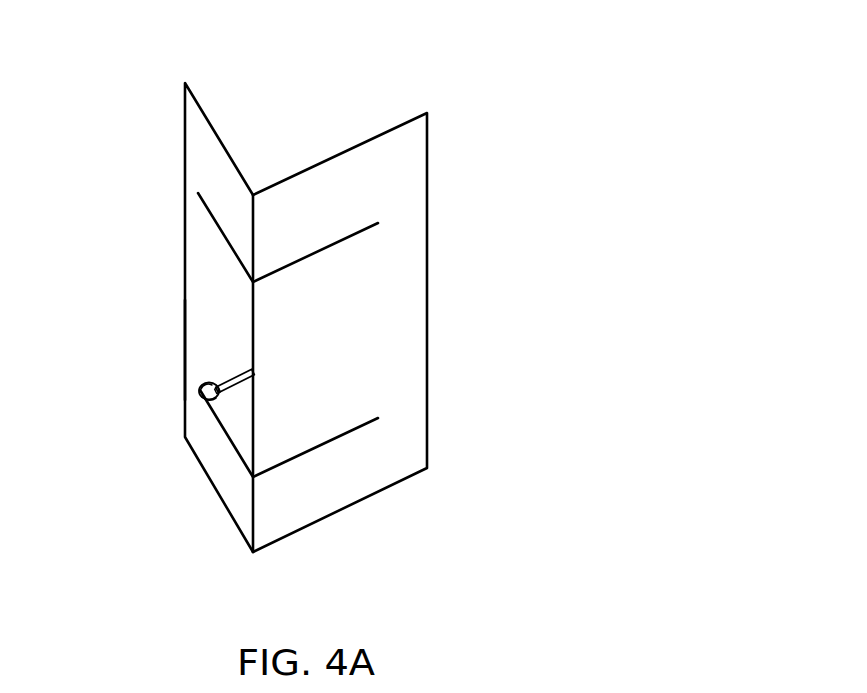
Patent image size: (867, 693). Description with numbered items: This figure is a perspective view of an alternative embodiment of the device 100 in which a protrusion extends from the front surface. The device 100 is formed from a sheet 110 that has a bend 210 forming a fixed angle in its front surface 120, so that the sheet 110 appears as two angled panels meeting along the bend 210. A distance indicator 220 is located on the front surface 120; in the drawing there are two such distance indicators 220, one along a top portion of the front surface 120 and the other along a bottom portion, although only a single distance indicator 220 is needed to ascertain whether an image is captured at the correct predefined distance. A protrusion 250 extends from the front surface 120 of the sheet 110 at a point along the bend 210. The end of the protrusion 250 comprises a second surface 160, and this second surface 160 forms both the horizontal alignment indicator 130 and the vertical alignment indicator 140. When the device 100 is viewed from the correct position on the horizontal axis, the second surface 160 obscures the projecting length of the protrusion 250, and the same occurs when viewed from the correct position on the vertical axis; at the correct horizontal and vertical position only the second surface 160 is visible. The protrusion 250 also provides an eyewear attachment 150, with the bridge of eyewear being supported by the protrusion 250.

The device 100 is at (645, 116).
The sheet 110 is at (418, 128).
The front surface 120 is at (388, 175).
The horizontal alignment indicator 130 is at (206, 384).
The vertical alignment indicator 140 is at (201, 389).
The eyewear attachment 150 is at (249, 362).
The second surface 160 is at (212, 401).
The bend 210 is at (240, 512).
The distance indicator 220 is at (203, 223).
The protrusion 250 is at (203, 338).